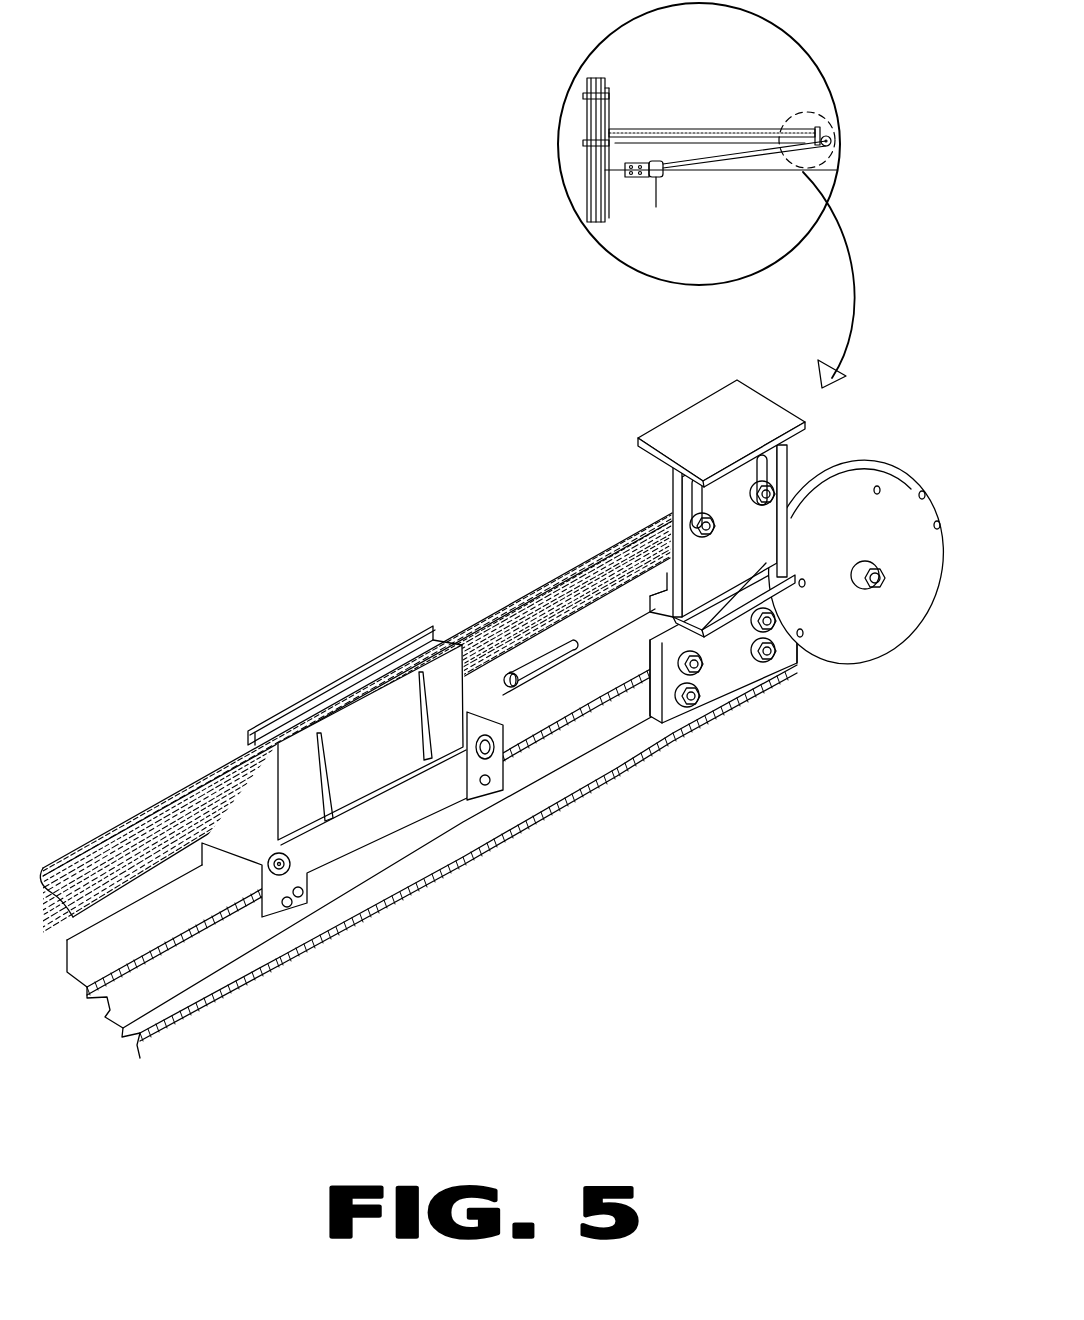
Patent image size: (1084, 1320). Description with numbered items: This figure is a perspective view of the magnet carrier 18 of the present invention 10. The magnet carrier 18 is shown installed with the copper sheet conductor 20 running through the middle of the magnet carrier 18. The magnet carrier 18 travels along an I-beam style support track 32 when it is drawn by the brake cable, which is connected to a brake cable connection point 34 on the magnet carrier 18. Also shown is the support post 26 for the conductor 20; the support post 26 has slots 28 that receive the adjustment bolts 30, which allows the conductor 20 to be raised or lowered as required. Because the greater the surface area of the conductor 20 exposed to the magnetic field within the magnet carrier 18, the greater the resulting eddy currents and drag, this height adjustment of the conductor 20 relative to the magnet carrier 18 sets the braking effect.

The present invention 10 is at (213, 272).
The magnet carrier 18 is at (352, 764).
The copper sheet conductor 20 is at (356, 725).
The support post 26 is at (745, 435).
The slots 28 is at (773, 532).
The adjustment bolts 30 is at (755, 492).
The I-beam style support track 32 is at (345, 880).
The brake cable connection point 34 is at (515, 690).